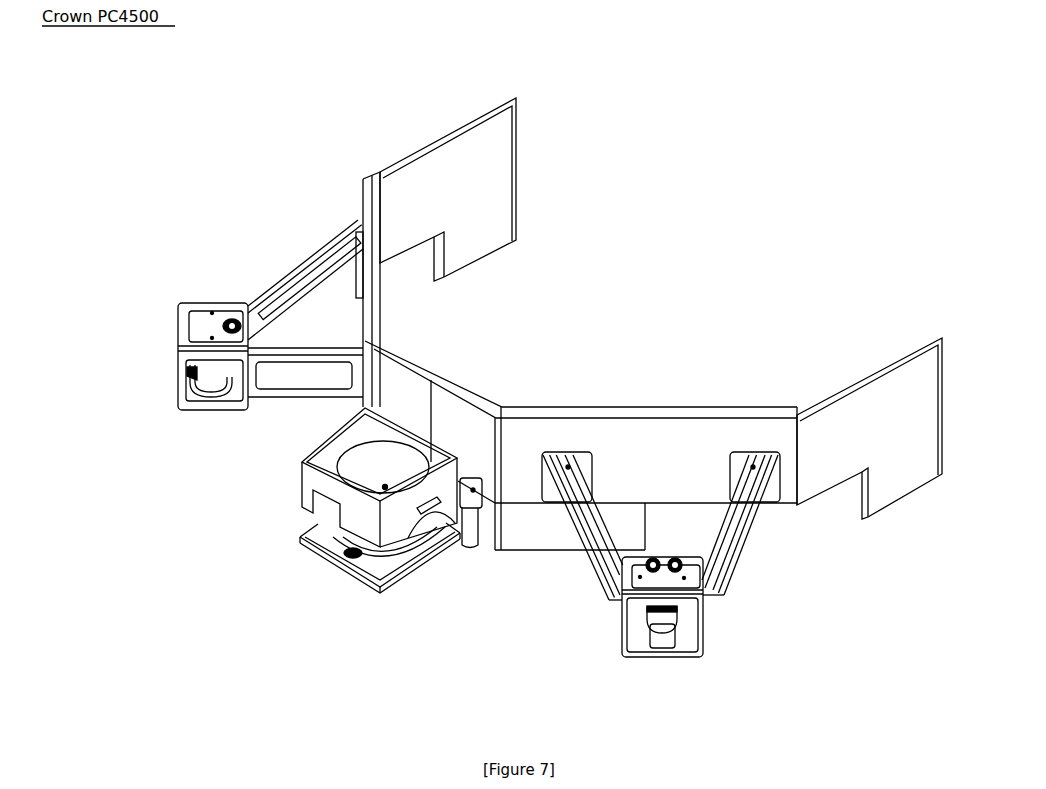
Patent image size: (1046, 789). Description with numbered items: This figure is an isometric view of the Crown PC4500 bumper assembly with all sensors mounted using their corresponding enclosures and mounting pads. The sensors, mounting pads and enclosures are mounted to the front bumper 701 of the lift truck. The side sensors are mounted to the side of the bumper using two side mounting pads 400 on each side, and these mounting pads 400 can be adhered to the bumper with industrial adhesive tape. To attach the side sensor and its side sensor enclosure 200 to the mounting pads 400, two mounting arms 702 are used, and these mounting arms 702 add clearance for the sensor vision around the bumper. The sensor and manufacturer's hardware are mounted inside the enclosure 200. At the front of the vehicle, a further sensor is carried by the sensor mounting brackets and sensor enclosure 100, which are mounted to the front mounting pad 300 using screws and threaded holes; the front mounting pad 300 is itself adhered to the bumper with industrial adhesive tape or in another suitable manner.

The sensor enclosure 100 is at (344, 531).
The side sensor enclosure 200 is at (395, 514).
The front mounting pad 300 is at (483, 559).
The side mounting pad 400 is at (360, 220).
The front bumper 701 is at (521, 189).
The mounting arm 702 is at (300, 346).